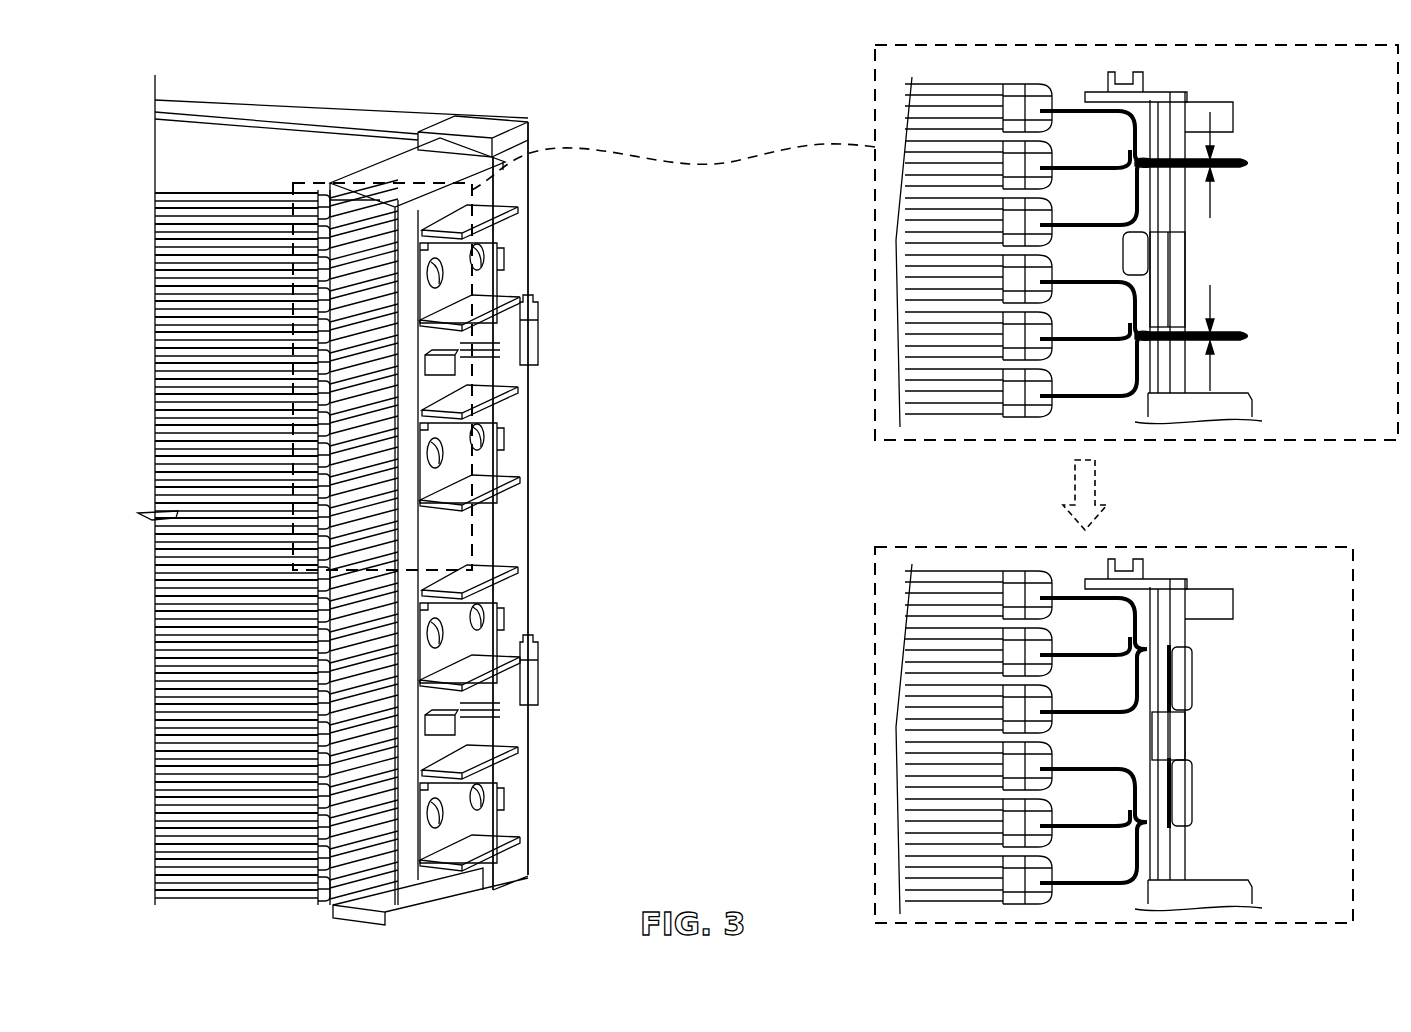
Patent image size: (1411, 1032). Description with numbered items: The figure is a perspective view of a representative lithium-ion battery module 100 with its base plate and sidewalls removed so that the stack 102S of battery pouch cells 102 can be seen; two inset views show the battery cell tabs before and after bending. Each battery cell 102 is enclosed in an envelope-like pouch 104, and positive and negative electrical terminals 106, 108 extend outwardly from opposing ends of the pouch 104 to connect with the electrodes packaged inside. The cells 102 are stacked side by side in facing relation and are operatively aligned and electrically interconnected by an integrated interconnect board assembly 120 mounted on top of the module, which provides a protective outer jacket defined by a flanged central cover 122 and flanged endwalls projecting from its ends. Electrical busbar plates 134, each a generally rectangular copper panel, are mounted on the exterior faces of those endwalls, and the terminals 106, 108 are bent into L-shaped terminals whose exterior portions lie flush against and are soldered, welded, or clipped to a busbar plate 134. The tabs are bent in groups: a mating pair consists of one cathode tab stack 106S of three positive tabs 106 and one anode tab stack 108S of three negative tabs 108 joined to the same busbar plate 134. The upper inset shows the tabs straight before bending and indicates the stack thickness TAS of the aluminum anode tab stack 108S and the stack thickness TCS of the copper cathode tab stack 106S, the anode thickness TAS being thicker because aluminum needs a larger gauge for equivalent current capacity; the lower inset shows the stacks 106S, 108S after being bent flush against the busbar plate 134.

The battery module 100 is at (622, 66).
The battery pouch cell 102 is at (910, 116).
The stack of battery cells 102S is at (203, 105).
The pouch 104 is at (362, 147).
The positive electrical terminal 106 is at (1243, 160).
The cathode tab stack 106S is at (1185, 690).
The negative electrical terminal 108 is at (1243, 333).
The anode tab stack 108S is at (1185, 792).
The integrated interconnect board assembly 120 is at (433, 100).
The central cover 122 is at (270, 117).
The electrical busbar plate 134 is at (1178, 258).
The cathode tab stack thickness TCS is at (1213, 212).
The anode tab stack thickness TAS is at (1213, 385).